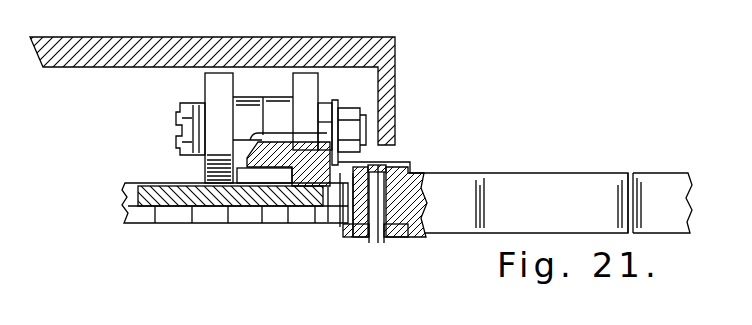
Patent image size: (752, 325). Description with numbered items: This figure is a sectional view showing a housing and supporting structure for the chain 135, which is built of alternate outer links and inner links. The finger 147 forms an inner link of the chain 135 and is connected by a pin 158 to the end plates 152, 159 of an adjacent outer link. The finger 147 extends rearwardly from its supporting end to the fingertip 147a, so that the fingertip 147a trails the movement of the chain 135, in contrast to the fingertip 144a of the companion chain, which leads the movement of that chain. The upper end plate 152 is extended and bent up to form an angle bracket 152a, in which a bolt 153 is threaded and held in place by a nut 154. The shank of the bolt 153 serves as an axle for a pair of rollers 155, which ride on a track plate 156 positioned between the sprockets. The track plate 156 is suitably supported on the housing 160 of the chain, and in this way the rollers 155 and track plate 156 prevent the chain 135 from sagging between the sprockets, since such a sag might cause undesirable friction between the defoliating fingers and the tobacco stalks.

The housing 160 is at (85, 67).
The bolt 153 is at (178, 107).
The rollers 155 is at (303, 80).
The angle bracket 152a is at (333, 100).
The nut 154 is at (350, 110).
The chain 135 is at (417, 142).
The upper end plate 152 is at (402, 165).
The end plate 159 is at (348, 238).
The track plate 156 is at (154, 183).
The pin 158 is at (378, 240).
The finger 147 is at (447, 186).
The fingertip 147a is at (612, 180).
The fingertip 144a is at (643, 180).